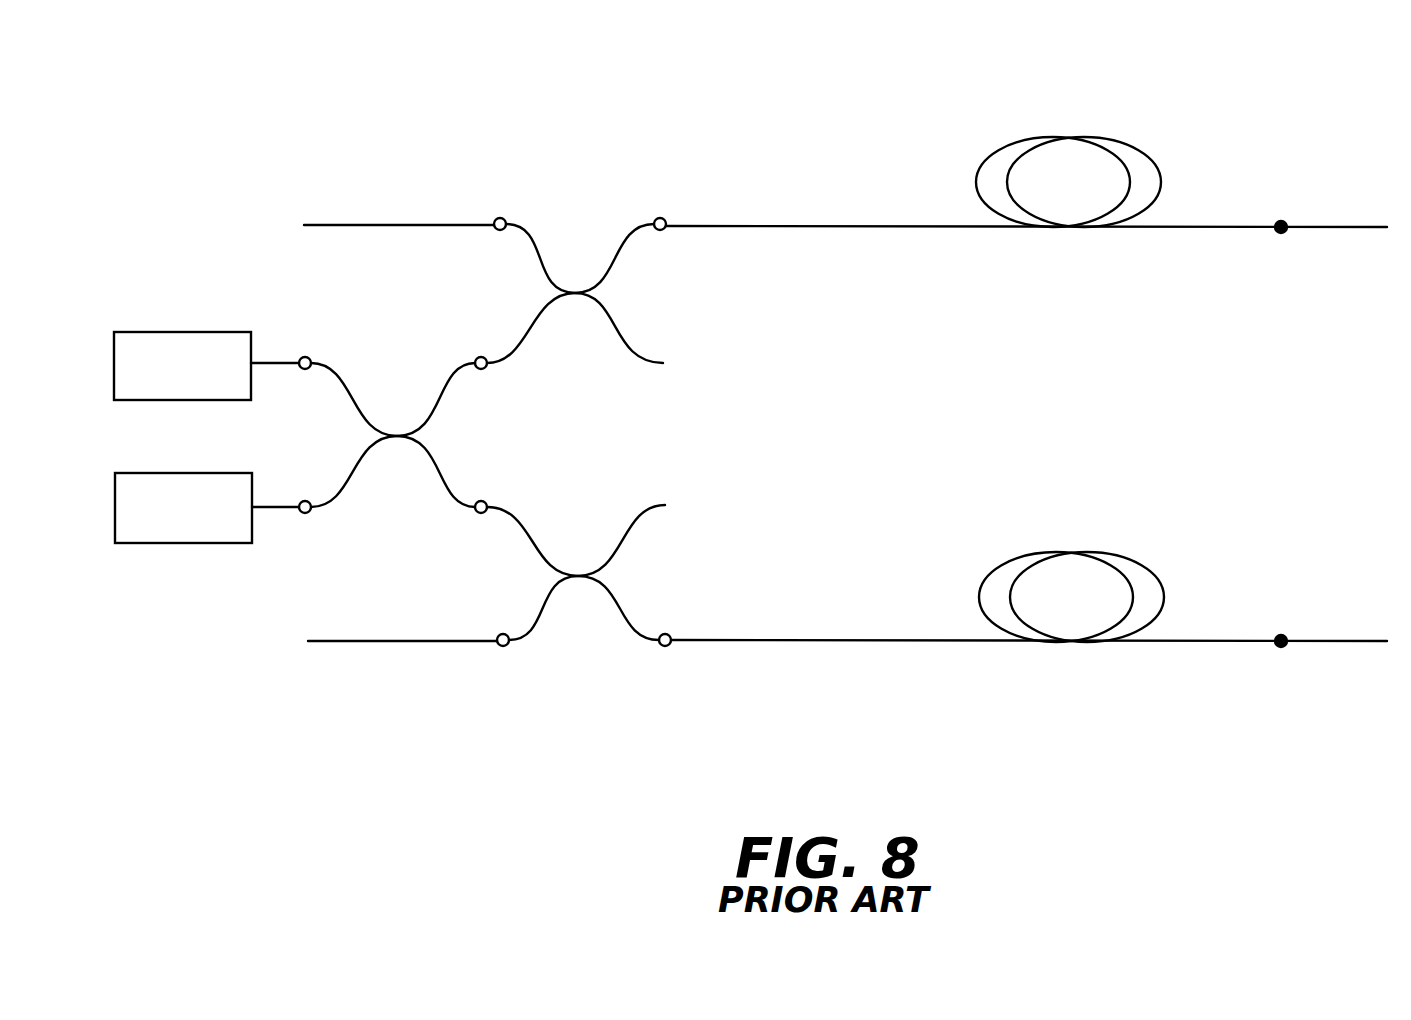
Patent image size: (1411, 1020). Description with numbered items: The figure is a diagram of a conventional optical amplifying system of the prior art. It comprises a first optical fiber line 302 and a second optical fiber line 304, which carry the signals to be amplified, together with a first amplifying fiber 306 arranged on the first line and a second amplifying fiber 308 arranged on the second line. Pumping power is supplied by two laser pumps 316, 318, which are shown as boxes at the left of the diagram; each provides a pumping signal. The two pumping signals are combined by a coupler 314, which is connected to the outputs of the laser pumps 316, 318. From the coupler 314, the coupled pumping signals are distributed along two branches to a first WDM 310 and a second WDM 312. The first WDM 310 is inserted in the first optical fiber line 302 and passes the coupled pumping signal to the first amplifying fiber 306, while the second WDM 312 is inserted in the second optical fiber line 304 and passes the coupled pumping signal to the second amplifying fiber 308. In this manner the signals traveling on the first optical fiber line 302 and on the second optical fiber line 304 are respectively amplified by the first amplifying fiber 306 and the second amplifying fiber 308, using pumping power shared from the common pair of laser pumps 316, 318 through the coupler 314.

The first optical fiber line 302 is at (411, 225).
The second optical fiber line 304 is at (402, 641).
The first amplifying fiber 306 is at (1071, 137).
The second amplifying fiber 308 is at (1076, 552).
The first WDM 310 is at (578, 268).
The second WDM 312 is at (578, 605).
The coupler 314 is at (397, 420).
The laser pump 316 is at (178, 343).
The laser pump 318 is at (180, 537).